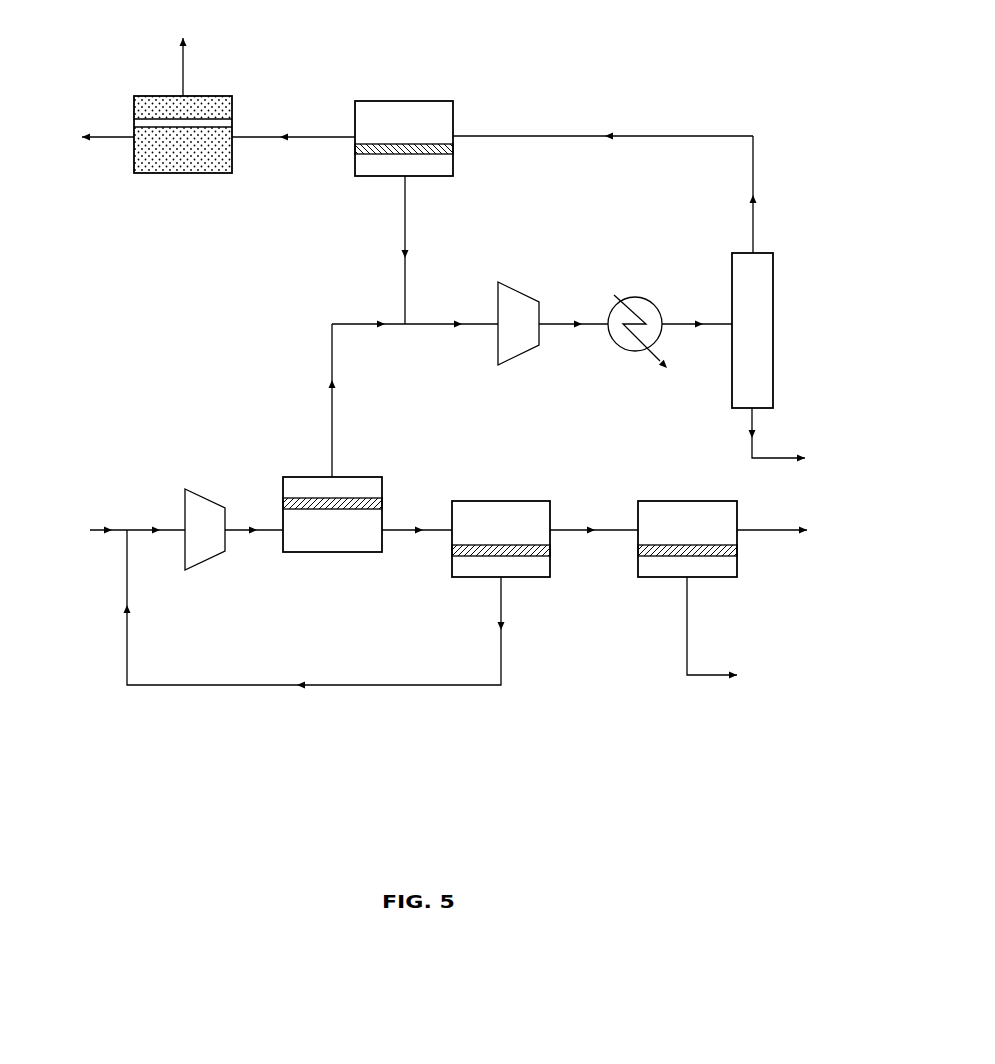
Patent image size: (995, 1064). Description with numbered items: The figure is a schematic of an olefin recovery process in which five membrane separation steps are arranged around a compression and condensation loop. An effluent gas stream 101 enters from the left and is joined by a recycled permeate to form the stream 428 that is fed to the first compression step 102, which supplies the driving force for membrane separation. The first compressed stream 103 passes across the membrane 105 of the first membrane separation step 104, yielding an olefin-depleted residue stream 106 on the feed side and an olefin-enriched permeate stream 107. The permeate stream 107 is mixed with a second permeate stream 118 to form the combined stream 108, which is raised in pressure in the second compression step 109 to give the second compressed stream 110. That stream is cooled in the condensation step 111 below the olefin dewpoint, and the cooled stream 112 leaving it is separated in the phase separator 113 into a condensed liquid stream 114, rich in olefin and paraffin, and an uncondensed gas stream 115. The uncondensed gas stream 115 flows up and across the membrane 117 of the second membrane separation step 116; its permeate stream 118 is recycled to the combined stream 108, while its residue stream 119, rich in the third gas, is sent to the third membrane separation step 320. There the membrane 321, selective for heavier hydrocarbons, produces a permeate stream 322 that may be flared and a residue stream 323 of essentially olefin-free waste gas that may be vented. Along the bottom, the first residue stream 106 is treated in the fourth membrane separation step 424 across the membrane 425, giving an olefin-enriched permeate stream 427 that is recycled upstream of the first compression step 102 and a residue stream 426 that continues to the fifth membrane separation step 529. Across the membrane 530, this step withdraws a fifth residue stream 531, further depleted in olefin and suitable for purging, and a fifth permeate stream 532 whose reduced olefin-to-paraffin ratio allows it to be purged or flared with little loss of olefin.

The effluent gas stream 101 is at (117, 531).
The first compression step 102 is at (205, 562).
The first compressed stream 103 is at (254, 544).
The first membrane separation step 104 is at (361, 527).
The membrane 105 is at (382, 503).
The residue stream 106 is at (417, 544).
The permeate stream 107 is at (315, 400).
The combined stream 108 is at (415, 338).
The second compression step 109 is at (520, 357).
The second compressed stream 110 is at (573, 338).
The condensation step 111 is at (657, 297).
The cooled stream 112 is at (697, 338).
The phase separator 113 is at (773, 298).
The condensed liquid stream 114 is at (797, 439).
The uncondensed gas stream 115 is at (624, 193).
The second membrane separation step 116 is at (433, 124).
The membrane 117 is at (453, 150).
The permeate stream 118 is at (386, 250).
The residue stream 119 is at (293, 149).
The third membrane separation step 320 is at (200, 173).
The membrane 321 is at (232, 118).
The permeate stream 322 is at (184, 55).
The residue stream 323 is at (89, 137).
The fourth membrane separation step 424 is at (530, 528).
The membrane 425 is at (550, 550).
The residue stream 426 is at (594, 518).
The permeate stream 427 is at (314, 621).
The combined feed stream 428 is at (152, 519).
The fifth membrane separation step 529 is at (715, 528).
The membrane 530 is at (737, 550).
The fifth residue stream 531 is at (792, 531).
The fifth permeate stream 532 is at (732, 631).